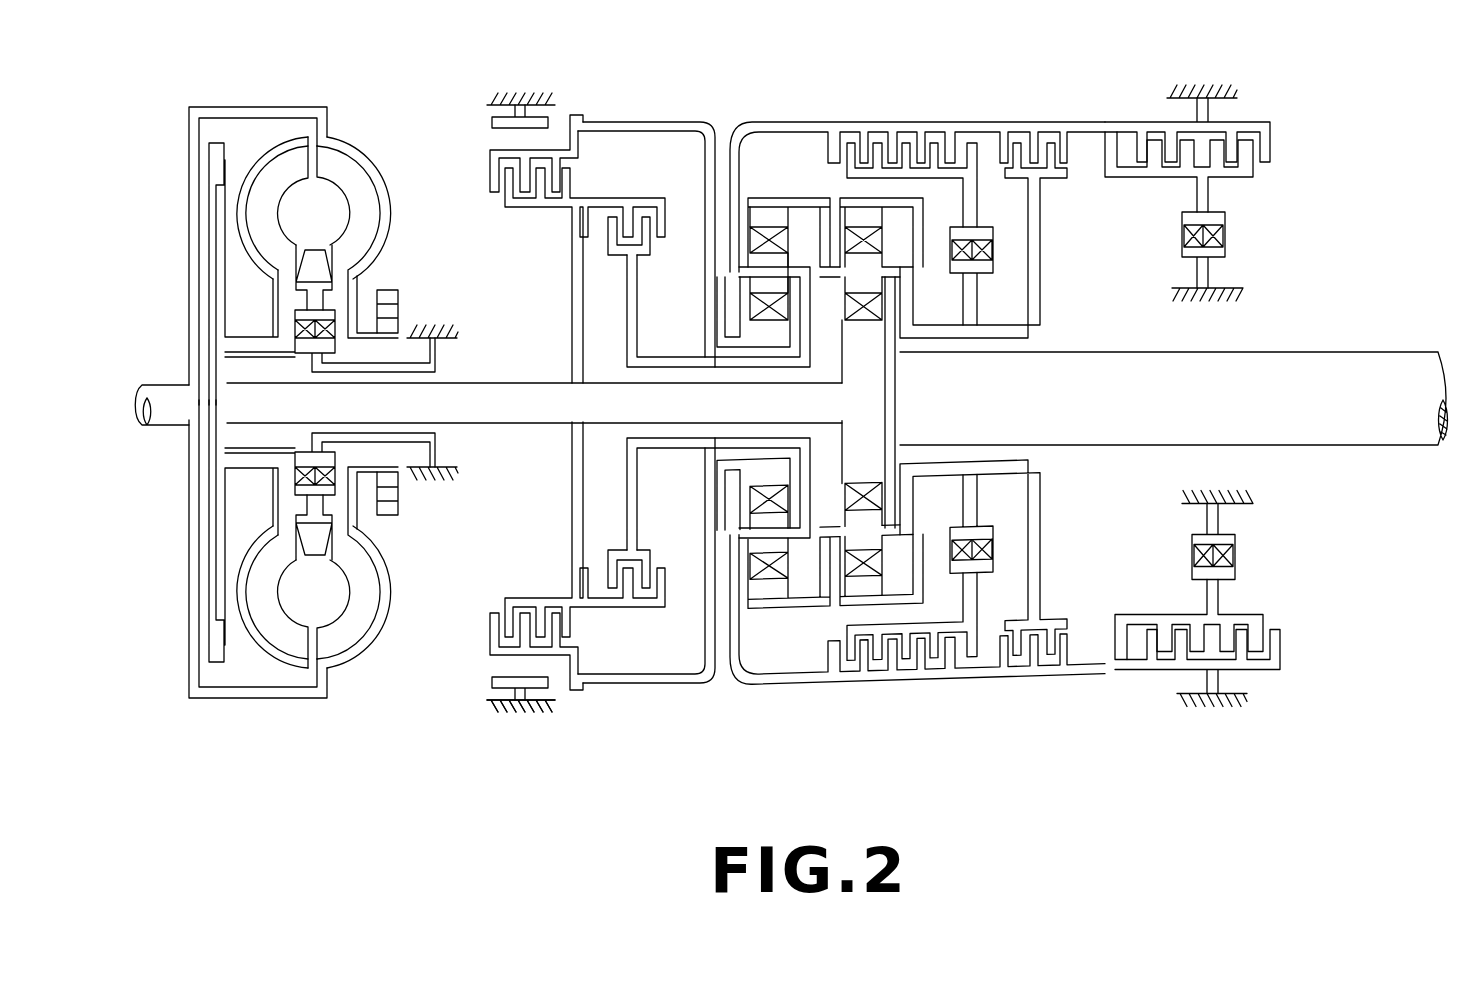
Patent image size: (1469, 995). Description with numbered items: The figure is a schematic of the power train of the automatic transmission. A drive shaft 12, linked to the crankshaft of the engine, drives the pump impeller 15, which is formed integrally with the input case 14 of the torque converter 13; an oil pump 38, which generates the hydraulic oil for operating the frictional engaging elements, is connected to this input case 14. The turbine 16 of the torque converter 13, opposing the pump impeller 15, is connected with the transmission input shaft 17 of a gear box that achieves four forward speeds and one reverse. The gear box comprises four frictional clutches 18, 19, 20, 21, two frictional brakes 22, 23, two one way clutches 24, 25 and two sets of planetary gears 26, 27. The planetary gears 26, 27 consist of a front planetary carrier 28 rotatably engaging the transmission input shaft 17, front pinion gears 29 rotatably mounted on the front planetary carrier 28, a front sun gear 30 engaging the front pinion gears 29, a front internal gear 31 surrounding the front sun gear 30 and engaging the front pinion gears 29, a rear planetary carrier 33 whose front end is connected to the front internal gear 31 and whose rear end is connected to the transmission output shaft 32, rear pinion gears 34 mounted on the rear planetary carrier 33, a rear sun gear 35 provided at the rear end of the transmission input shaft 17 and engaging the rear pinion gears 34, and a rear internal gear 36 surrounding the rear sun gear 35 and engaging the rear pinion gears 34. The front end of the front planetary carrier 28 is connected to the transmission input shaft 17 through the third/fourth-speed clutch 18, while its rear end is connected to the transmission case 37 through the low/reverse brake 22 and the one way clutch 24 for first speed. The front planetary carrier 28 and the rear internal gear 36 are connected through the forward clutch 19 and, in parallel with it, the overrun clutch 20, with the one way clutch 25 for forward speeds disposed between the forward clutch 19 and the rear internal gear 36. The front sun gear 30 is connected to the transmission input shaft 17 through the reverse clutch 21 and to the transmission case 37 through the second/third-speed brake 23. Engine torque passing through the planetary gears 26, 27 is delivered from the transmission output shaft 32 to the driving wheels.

The drive shaft 12 is at (162, 407).
The torque converter 13 is at (273, 100).
The input case 14 is at (350, 150).
The pump impeller 15 is at (373, 210).
The turbine 16 is at (258, 208).
The transmission input shaft 17 is at (495, 397).
The 3rd/4th-speed clutch 18 is at (633, 182).
The forward clutch 19 is at (880, 680).
The overrun clutch 20 is at (1036, 115).
The reverse clutch 21 is at (484, 141).
The low/reverse brake 22 is at (1252, 112).
The 2nd/3rd-speed brake 23 is at (486, 681).
The one way clutch for 1st-speed 24 is at (1238, 238).
The one way clutch for forward speeds 25 is at (1005, 549).
The planetary gear 26 is at (785, 162).
The planetary gear 27 is at (905, 192).
The front planetary carrier 28 is at (768, 263).
The front pinion gears 29 is at (760, 518).
The front sun gear 30 is at (748, 326).
The front internal gear 31 is at (762, 200).
The transmission output shaft 32 is at (1310, 356).
The rear planetary carrier 33 is at (892, 296).
The rear pinion gears 34 is at (876, 518).
The rear sun gear 35 is at (872, 330).
The rear internal gear 36 is at (860, 590).
The transmission case 37 is at (1199, 92).
The oil pump 38 is at (404, 302).